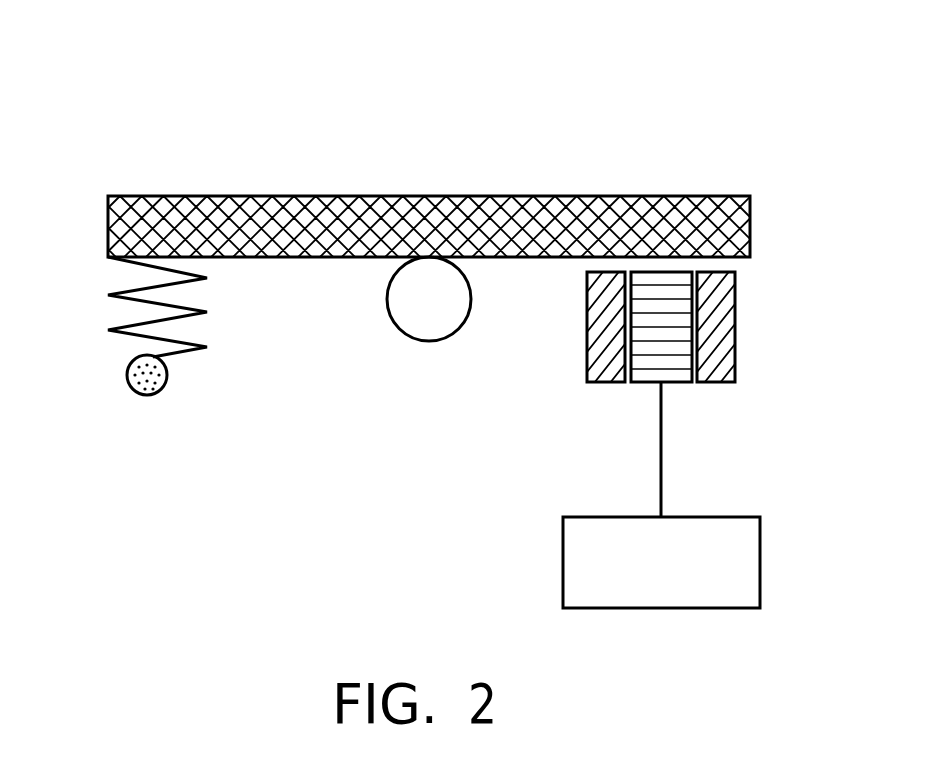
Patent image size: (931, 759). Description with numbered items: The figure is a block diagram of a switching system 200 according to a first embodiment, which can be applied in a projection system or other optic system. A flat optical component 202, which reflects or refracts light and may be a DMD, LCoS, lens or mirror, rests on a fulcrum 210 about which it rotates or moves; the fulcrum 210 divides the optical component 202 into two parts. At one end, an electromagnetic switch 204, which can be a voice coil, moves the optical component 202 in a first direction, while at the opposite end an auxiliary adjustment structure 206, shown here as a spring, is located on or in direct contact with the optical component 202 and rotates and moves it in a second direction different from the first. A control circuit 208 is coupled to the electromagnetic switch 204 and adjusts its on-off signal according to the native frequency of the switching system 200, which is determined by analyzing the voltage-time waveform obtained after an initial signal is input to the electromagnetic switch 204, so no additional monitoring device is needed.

The switching system 200 is at (75, 62).
The optical component 202 is at (310, 207).
The electromagnetic switch 204 is at (735, 325).
The auxiliary adjustment structure 206 is at (150, 395).
The control circuit 208 is at (745, 562).
The fulcrum 210 is at (432, 317).